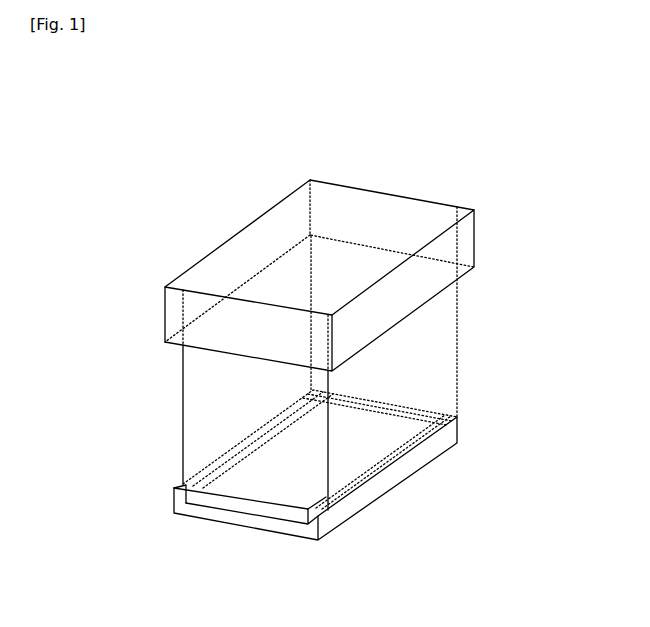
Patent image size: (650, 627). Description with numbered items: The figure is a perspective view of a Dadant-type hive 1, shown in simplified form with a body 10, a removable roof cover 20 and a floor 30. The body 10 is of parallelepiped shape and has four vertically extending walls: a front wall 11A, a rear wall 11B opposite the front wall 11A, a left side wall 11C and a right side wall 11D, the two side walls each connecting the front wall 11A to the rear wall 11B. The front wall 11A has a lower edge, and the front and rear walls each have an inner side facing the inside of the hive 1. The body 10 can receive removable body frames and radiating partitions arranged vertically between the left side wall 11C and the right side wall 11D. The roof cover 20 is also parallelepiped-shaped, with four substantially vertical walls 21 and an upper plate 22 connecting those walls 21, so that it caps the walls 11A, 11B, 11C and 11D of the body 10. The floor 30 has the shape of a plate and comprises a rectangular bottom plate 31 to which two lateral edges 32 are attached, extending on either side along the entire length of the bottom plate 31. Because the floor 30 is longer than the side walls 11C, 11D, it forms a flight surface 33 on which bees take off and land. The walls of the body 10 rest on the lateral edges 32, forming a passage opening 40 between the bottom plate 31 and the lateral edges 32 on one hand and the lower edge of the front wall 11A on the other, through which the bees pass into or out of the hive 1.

The hive 1 is at (127, 173).
The body 10 is at (458, 378).
The front wall 11A is at (197, 418).
The rear wall 11B is at (443, 352).
The left side wall 11C is at (213, 392).
The right side wall 11D is at (343, 462).
The roof cover 20 is at (422, 222).
The walls 21 is at (287, 227).
The upper plate 22 is at (362, 207).
The floor 30 is at (445, 453).
The bottom plate 31 is at (240, 520).
The lateral edges 32 is at (178, 487).
The flight surface 33 is at (285, 517).
The passage opening 40 is at (228, 502).